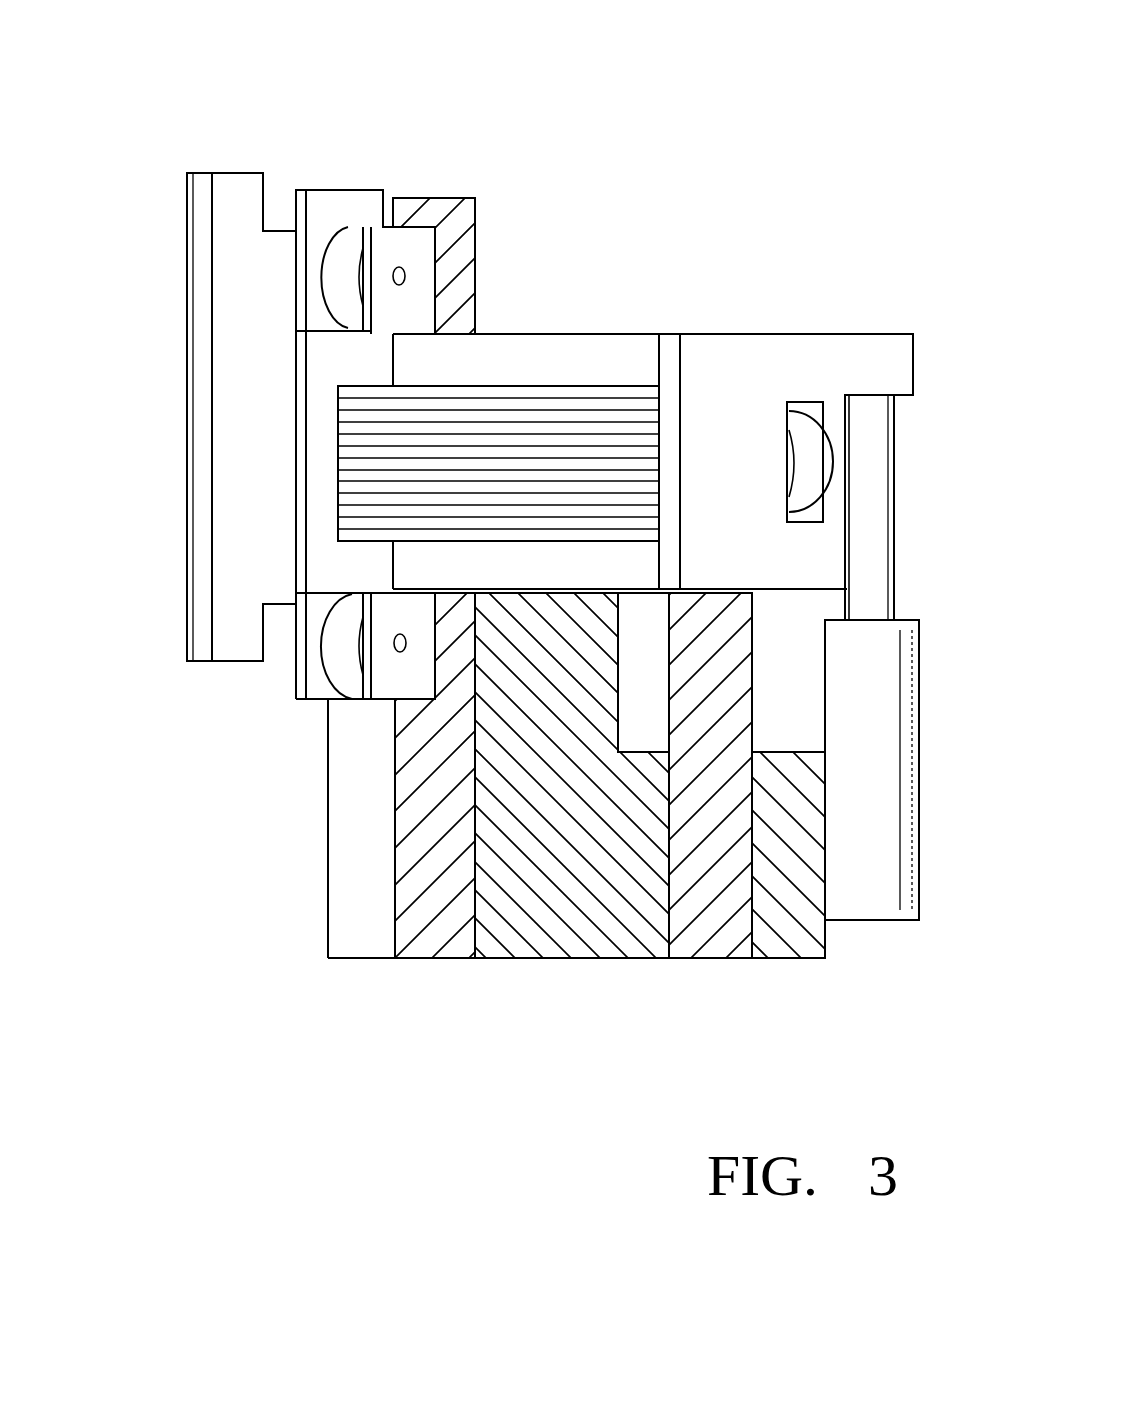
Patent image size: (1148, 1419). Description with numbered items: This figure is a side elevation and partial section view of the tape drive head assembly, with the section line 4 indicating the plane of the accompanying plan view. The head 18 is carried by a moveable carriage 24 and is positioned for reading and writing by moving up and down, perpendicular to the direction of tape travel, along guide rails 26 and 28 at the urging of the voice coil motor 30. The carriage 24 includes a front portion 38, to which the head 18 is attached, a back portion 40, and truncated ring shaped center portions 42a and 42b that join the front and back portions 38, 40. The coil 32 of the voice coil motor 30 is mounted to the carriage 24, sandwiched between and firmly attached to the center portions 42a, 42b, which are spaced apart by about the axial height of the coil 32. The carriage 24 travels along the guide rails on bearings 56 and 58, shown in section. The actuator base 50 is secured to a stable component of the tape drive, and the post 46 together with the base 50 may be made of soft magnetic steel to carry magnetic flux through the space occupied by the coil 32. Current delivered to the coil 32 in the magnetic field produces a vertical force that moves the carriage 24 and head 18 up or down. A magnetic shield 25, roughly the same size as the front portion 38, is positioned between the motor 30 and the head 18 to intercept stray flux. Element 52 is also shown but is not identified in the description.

The section line 4- 4 is at (518, 238).
The head 18 is at (186, 263).
The carriage 24 is at (758, 324).
The magnetic shield 25 is at (299, 190).
The guide rail 26 is at (452, 200).
The guide rail 28 is at (723, 958).
The voice coil motor 30 is at (641, 285).
The coil 32 is at (648, 432).
The front portion 38 is at (318, 194).
The back portion 40 is at (897, 340).
The center portion 42a is at (564, 345).
The center portion 42b is at (632, 566).
The post 46 is at (598, 668).
The actuator base 50 is at (571, 942).
The circuit board 52 is at (883, 938).
The bearing 56 is at (348, 236).
The bearing 58 is at (805, 425).